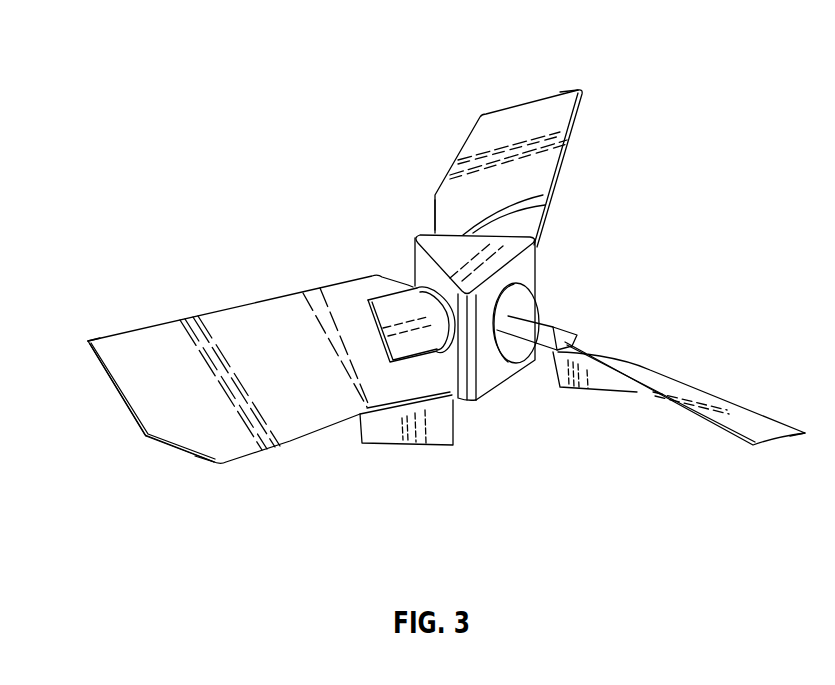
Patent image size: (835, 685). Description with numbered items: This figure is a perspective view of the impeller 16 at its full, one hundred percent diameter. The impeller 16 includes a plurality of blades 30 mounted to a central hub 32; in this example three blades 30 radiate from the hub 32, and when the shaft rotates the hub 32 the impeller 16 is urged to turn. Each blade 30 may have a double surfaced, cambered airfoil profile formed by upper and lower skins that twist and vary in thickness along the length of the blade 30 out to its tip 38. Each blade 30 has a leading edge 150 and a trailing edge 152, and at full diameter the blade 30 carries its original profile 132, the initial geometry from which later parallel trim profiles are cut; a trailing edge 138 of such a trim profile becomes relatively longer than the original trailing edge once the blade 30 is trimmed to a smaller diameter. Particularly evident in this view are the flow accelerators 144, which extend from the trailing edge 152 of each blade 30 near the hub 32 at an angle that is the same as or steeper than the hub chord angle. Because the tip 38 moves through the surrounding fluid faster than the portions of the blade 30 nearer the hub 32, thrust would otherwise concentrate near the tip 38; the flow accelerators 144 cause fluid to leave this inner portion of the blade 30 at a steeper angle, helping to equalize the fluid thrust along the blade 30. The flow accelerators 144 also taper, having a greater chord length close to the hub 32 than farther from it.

The impeller 16 is at (697, 221).
The blade 30 is at (590, 108).
The hub 32 is at (540, 284).
The tip 38 is at (550, 90).
The original profile 132 is at (117, 388).
The trailing edge of the trim profile 138 is at (205, 462).
The flow accelerator 144 is at (455, 432).
The leading edge 150 is at (575, 127).
The trailing edge 152 is at (433, 205).